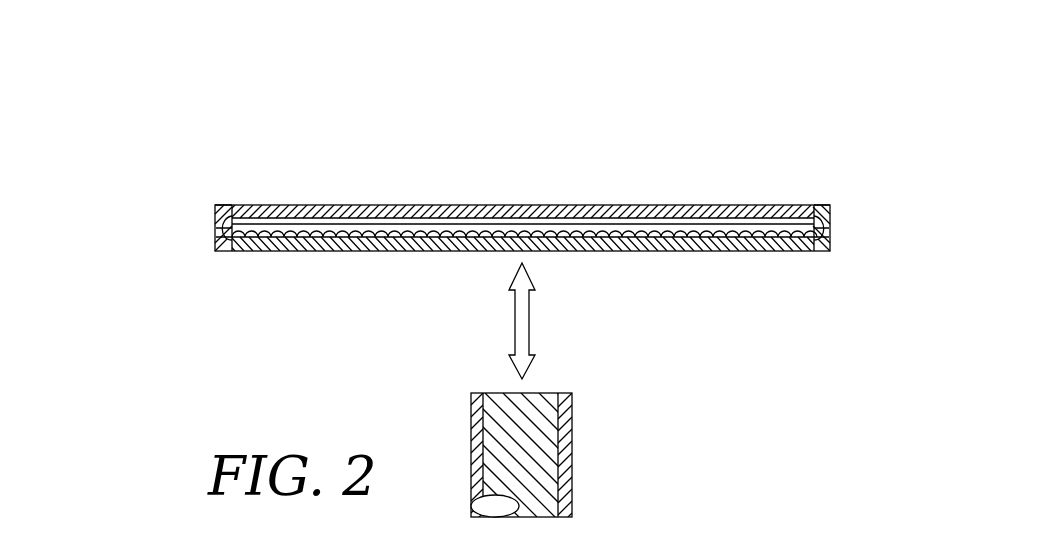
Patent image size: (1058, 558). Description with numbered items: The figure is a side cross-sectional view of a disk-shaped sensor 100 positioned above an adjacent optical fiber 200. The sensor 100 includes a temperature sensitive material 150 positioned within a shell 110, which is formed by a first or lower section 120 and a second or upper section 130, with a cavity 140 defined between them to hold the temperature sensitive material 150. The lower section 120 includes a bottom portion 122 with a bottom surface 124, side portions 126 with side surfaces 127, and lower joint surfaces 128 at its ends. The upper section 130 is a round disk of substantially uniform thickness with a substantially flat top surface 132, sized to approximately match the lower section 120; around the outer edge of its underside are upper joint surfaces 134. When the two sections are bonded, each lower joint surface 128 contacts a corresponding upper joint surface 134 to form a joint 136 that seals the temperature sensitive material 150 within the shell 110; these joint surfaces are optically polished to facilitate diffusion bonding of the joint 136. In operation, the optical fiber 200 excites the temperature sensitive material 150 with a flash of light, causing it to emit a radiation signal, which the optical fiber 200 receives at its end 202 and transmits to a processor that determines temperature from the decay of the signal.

The sensor 100 is at (522, 131).
The shell 110 is at (399, 202).
The lower section 120 is at (530, 276).
The bottom portion 122 is at (530, 276).
The bottom surface 124 is at (396, 251).
The side portions 126 is at (213, 238).
The side surfaces 127 is at (212, 228).
The lower joint surfaces 128 is at (218, 251).
The upper section 130 is at (530, 179).
The top surface 132 is at (580, 206).
The upper joint surfaces 134 is at (216, 206).
The joint 136 is at (213, 210).
The cavity 140 is at (644, 222).
The temperature sensitive material 150 is at (718, 234).
The optical fiber 200 is at (546, 447).
The end 202 is at (540, 393).